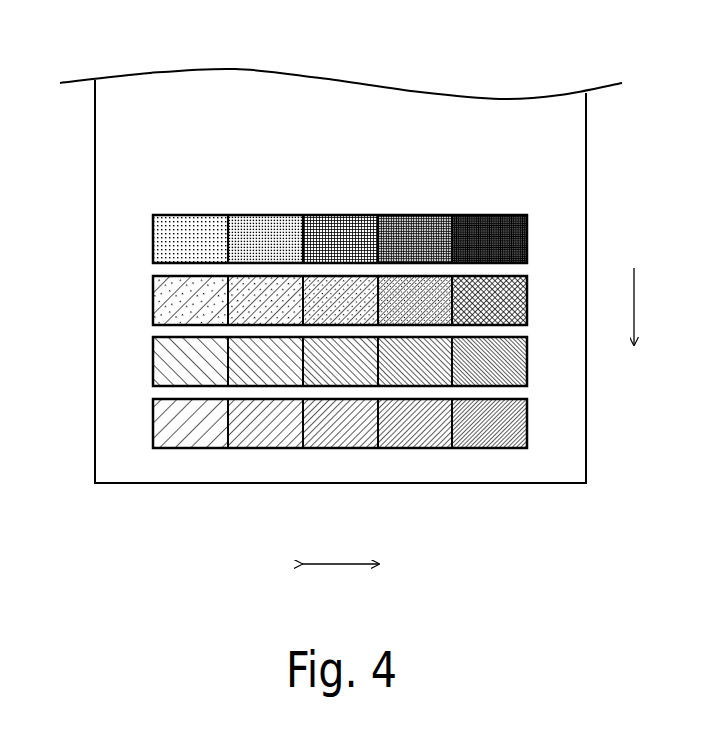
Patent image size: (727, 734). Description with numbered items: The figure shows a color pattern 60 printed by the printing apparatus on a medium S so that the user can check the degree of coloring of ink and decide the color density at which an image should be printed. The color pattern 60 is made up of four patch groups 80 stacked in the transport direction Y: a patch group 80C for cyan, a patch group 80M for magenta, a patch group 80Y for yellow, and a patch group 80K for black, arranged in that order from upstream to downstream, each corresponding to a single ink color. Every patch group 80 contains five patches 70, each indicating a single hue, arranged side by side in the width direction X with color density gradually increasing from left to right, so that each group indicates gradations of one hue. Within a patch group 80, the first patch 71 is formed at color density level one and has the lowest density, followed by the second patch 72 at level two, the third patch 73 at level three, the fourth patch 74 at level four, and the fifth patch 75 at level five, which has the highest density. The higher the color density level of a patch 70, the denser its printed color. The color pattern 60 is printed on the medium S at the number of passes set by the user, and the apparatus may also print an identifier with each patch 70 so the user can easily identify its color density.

The color pattern 60 is at (280, 306).
The patch 70 is at (280, 209).
The patch group 80 is at (256, 211).
The patch group for cyan 80C is at (153, 239).
The patch group for magenta 80M is at (153, 299).
The patch group for yellow 80Y is at (153, 361).
The patch group for black 80K is at (153, 422).
The first patch 71 is at (205, 339).
The second patch 72 is at (263, 440).
The third patch 73 is at (338, 440).
The fourth patch 74 is at (413, 440).
The fifth patch 75 is at (488, 440).
The medium S is at (586, 152).
The width direction X is at (340, 580).
The transport direction Y is at (645, 306).